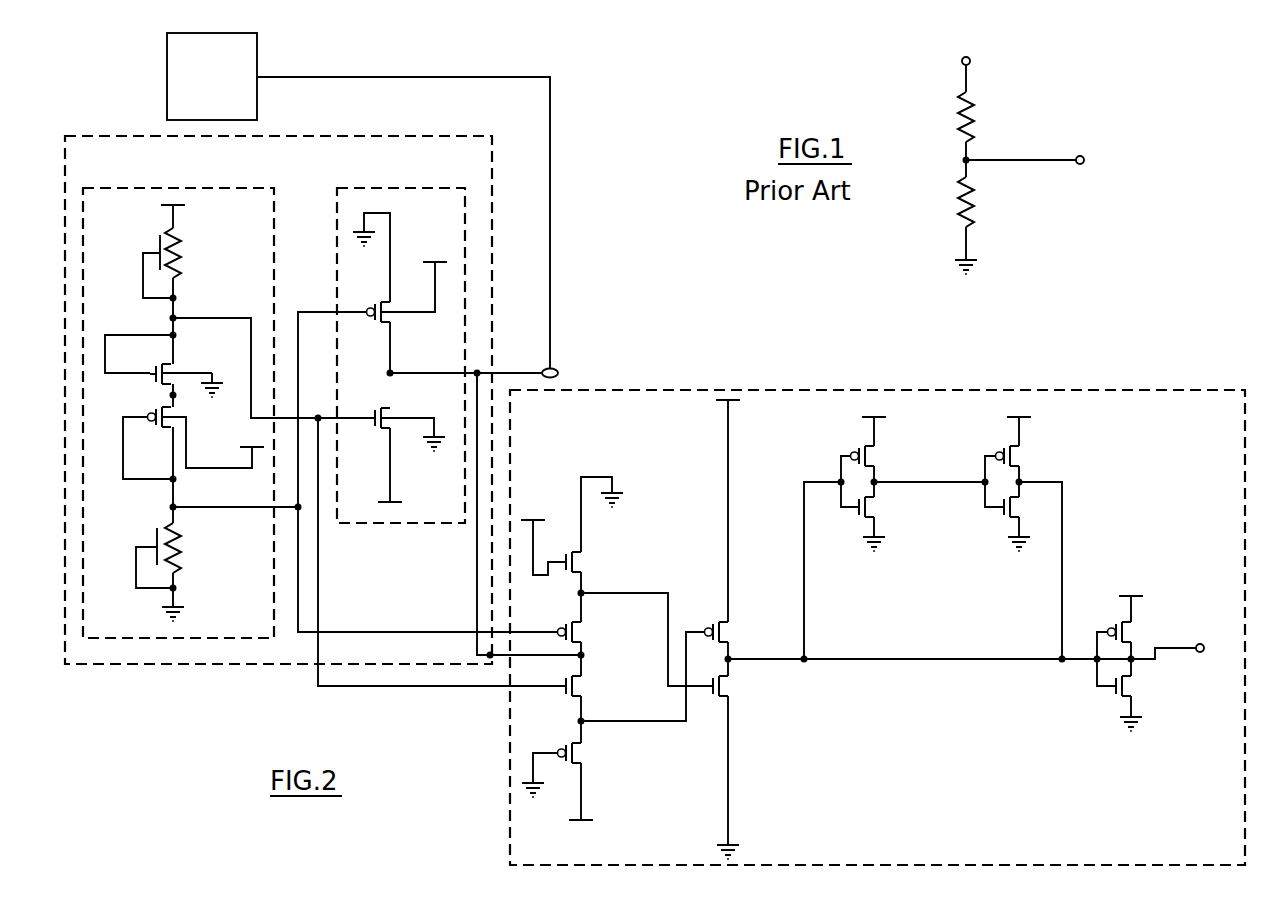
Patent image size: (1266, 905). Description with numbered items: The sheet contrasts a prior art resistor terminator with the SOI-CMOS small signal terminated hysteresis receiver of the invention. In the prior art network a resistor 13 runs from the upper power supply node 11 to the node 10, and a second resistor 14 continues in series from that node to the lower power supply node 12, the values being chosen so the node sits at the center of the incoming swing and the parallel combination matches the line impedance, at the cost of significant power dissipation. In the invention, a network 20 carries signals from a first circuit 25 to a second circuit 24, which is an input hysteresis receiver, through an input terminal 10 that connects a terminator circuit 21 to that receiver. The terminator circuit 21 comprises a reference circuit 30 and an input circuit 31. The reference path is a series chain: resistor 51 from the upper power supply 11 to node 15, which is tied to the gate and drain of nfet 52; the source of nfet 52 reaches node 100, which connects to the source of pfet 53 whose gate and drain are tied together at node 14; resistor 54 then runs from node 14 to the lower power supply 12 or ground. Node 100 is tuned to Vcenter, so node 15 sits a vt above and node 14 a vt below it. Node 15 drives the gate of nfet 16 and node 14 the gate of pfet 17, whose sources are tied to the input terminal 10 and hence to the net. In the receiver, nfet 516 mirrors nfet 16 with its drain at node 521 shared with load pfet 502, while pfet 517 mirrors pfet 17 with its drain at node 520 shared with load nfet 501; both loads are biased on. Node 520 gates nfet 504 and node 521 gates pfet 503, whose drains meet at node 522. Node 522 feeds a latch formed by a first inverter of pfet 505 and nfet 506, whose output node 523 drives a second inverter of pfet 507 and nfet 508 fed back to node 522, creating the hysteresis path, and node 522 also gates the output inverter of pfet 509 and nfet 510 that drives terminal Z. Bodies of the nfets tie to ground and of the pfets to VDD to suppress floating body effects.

In FIG. 2, the input terminal 10 is at (545, 369).
In FIG. 1, the input terminal 10 is at (1083, 164).
In FIG. 2, the upper power supply node 11 is at (162, 207).
In FIG. 1, the upper power supply node 11 is at (962, 59).
In FIG. 2, the lower power supply node 12 is at (213, 378).
In FIG. 1, the lower power supply node 12 is at (950, 274).
In FIG. 1, the resistor 13 is at (958, 116).
In FIG. 2, the node 14 is at (180, 505).
In FIG. 1, the node 14 is at (958, 203).
In FIG. 2, the node 15 is at (180, 315).
In FIG. 2, the nfet 16 is at (392, 425).
In FIG. 2, the pfet 17 is at (392, 318).
In FIG. 2, the network 20 is at (453, 75).
In FIG. 2, the terminator circuit 21 is at (415, 133).
In FIG. 2, the second circuit 24 is at (1138, 388).
In FIG. 2, the first circuit 25 is at (200, 88).
In FIG. 2, the reference circuit 30 is at (193, 186).
In FIG. 2, the input circuit 31 is at (405, 185).
In FIG. 2, the resistor 51 is at (180, 294).
In FIG. 2, the nfet 52 is at (157, 364).
In FIG. 2, the pfet 53 is at (176, 411).
In FIG. 2, the resistor 54 is at (177, 557).
In FIG. 2, the node 100 is at (170, 395).
In FIG. 2, the nfet 501 is at (584, 566).
In FIG. 2, the pfet 502 is at (585, 758).
In FIG. 2, the pfet 503 is at (731, 636).
In FIG. 2, the nfet 504 is at (731, 690).
In FIG. 2, the pfet 505 is at (876, 452).
In FIG. 2, the nfet 506 is at (877, 510).
In FIG. 2, the pfet 507 is at (1022, 456).
In FIG. 2, the nfet 508 is at (1022, 510).
In FIG. 2, the pfet 509 is at (1133, 633).
In FIG. 2, the nfet 510 is at (1134, 690).
In FIG. 2, the nfet 516 is at (585, 691).
In FIG. 2, the pfet 517 is at (585, 637).
In FIG. 2, the node 520 is at (654, 590).
In FIG. 2, the node 521 is at (669, 730).
In FIG. 2, the node 522 is at (892, 659).
In FIG. 2, the node 523 is at (919, 479).